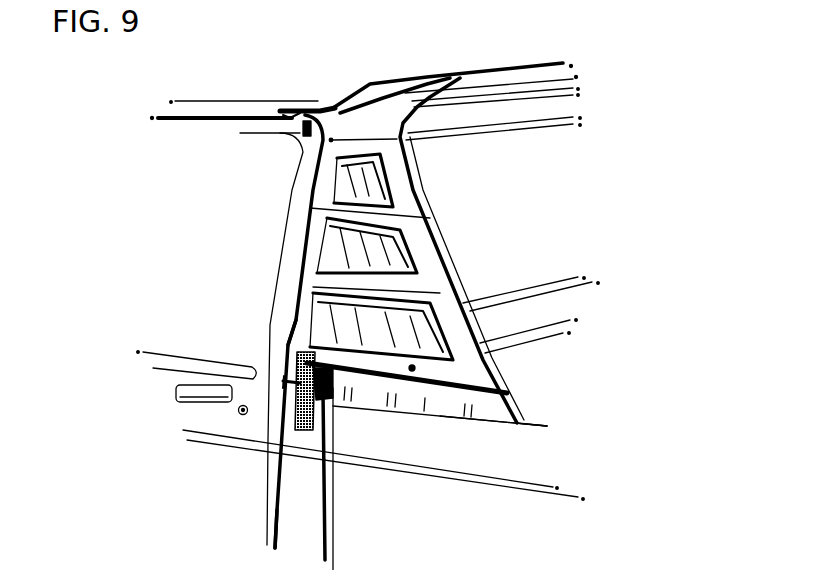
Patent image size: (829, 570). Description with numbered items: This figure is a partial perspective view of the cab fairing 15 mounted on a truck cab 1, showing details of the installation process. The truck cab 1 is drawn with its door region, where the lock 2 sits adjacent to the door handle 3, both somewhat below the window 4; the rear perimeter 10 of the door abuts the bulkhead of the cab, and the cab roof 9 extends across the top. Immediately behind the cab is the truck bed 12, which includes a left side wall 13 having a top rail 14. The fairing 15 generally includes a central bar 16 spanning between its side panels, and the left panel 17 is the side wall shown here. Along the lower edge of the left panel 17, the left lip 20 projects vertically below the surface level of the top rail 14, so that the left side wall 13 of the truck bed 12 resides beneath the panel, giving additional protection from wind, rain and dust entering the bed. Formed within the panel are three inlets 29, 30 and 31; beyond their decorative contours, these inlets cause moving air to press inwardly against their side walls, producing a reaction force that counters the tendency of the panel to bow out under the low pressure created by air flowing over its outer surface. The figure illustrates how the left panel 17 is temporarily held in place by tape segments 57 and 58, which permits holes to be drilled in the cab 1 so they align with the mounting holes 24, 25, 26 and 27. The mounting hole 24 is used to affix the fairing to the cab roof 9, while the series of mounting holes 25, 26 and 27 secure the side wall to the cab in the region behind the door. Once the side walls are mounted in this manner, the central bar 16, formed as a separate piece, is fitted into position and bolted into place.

The truck cab 1 is at (150, 463).
The lock 2 is at (242, 417).
The door handle 3 is at (183, 402).
The window 4 is at (153, 370).
The cab roof 9 is at (218, 101).
The rear perimeter 10 is at (270, 493).
The truck bed 12 is at (600, 316).
The left side wall 13 is at (428, 531).
The top rail 14 is at (547, 412).
The cab fairing 15 is at (555, 52).
The central bar 16 is at (463, 72).
The left panel 17 is at (427, 212).
The left lip 20 is at (463, 403).
The mounting hole 24 is at (292, 106).
The mounting hole 25 is at (333, 143).
The mounting hole 26 is at (310, 262).
The mounting hole 27 is at (300, 382).
The inlet 29 is at (393, 182).
The inlet 30 is at (417, 247).
The inlet 31 is at (440, 303).
The tape segment 57 is at (307, 430).
The tape segment 58 is at (318, 106).